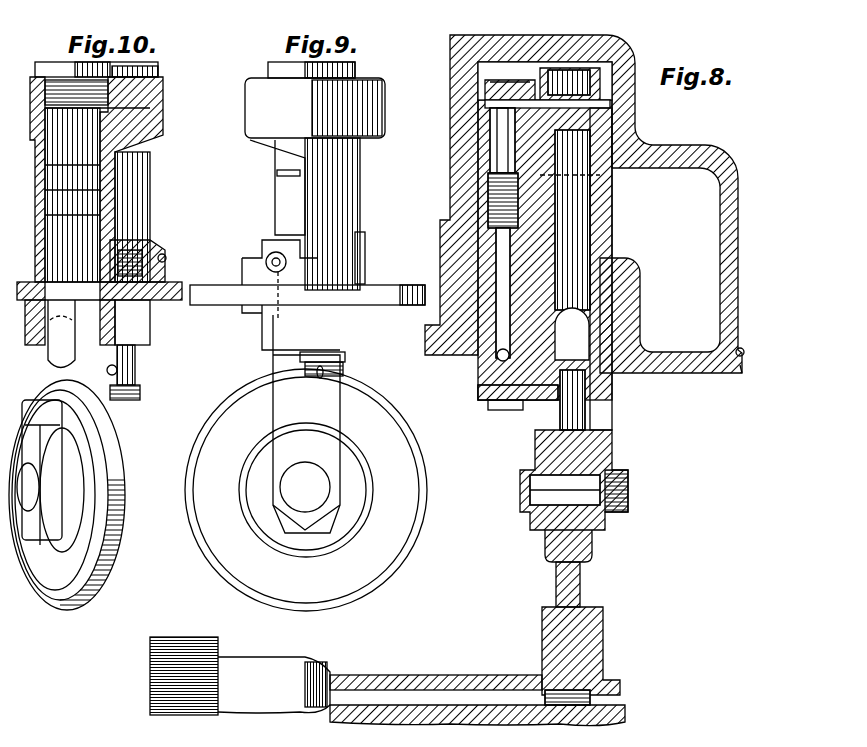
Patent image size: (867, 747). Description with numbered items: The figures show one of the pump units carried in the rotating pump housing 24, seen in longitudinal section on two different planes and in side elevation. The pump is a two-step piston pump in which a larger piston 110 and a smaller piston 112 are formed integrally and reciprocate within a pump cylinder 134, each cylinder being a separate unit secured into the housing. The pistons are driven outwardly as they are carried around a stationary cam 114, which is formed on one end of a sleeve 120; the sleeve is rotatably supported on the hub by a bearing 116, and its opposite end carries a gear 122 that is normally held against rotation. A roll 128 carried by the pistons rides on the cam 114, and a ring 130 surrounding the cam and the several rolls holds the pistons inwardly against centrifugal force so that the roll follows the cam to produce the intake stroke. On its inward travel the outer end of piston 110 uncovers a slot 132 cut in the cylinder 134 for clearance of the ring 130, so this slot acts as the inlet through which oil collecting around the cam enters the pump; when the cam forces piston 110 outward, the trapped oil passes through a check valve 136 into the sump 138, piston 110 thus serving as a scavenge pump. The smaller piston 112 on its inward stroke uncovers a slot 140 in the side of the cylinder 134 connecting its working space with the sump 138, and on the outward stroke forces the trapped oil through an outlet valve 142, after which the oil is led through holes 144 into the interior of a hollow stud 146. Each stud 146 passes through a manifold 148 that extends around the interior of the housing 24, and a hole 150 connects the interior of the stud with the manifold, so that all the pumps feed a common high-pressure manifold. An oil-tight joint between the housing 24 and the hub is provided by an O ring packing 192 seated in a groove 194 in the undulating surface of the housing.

In FIG. 8, the housing 24 is at (700, 145).
In FIG. 10, the piston 110 is at (140, 330).
In FIG. 9, the piston 110 is at (272, 366).
In FIG. 8, the piston 110 is at (605, 412).
In FIG. 10, the piston 112 is at (90, 180).
In FIG. 8, the piston 112 is at (600, 195).
In FIG. 8, the cam 114 is at (603, 620).
In FIG. 8, the bearing 116 is at (570, 692).
In FIG. 8, the sleeve 120 is at (415, 680).
In FIG. 8, the gear 122 is at (150, 648).
In FIG. 10, the roll 128 is at (112, 520).
In FIG. 9, the roll 128 is at (405, 545).
In FIG. 8, the roll 128 is at (578, 590).
In FIG. 8, the ring 130 is at (580, 375).
In FIG. 10, the slot 132 is at (46, 352).
In FIG. 8, the slot 132 is at (572, 328).
In FIG. 10, the pump cylinder 134 is at (110, 232).
In FIG. 9, the pump cylinder 134 is at (362, 218).
In FIG. 8, the pump cylinder 134 is at (612, 243).
In FIG. 10, the check valve 136 is at (158, 248).
In FIG. 8, the sump 138 is at (725, 215).
In FIG. 9, the slot 140 is at (285, 170).
In FIG. 8, the slot 140 is at (633, 135).
In FIG. 8, the outlet valve 142 is at (497, 135).
In FIG. 8, the holes 144 is at (500, 290).
In FIG. 10, the hollow stud 146 is at (135, 355).
In FIG. 9, the hollow stud 146 is at (340, 368).
In FIG. 8, the hollow stud 146 is at (485, 392).
In FIG. 8, the manifold 148 is at (490, 365).
In FIG. 10, the hole 150 is at (117, 370).
In FIG. 8, the hole 150 is at (496, 358).
In FIG. 8, the O ring packing 192 is at (744, 352).
In FIG. 8, the groove 194 is at (742, 368).